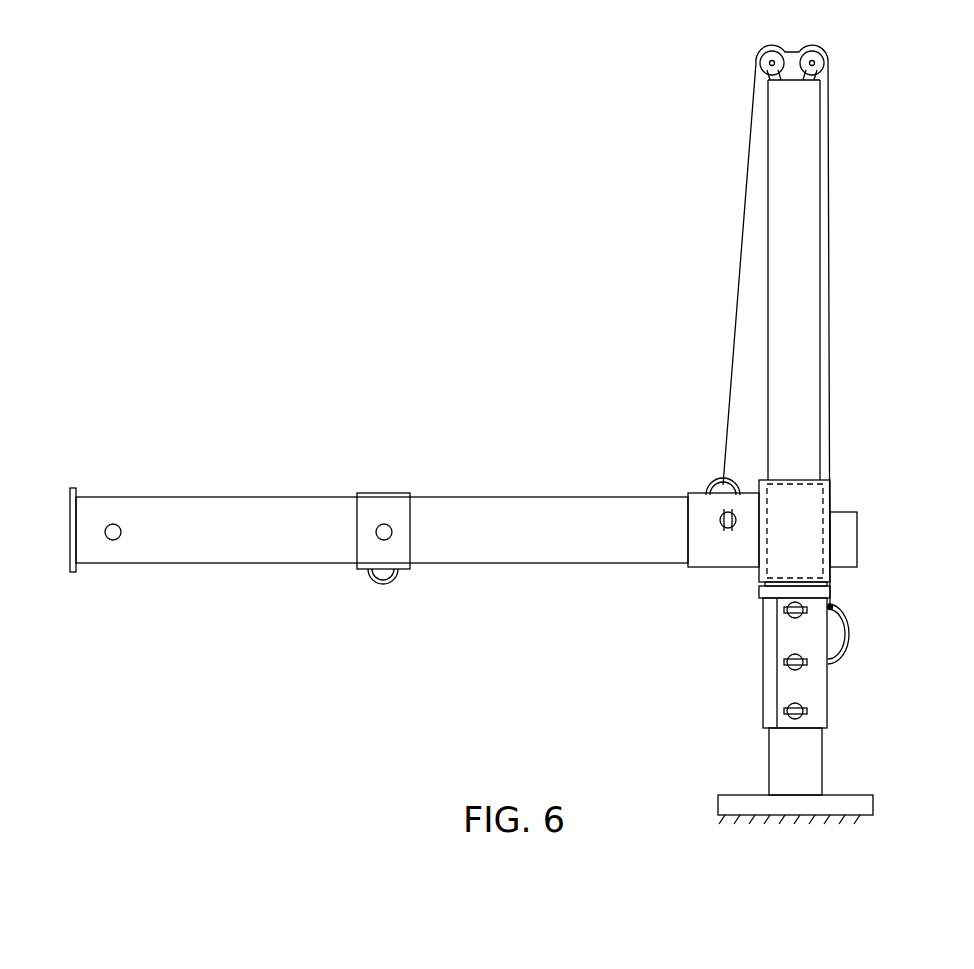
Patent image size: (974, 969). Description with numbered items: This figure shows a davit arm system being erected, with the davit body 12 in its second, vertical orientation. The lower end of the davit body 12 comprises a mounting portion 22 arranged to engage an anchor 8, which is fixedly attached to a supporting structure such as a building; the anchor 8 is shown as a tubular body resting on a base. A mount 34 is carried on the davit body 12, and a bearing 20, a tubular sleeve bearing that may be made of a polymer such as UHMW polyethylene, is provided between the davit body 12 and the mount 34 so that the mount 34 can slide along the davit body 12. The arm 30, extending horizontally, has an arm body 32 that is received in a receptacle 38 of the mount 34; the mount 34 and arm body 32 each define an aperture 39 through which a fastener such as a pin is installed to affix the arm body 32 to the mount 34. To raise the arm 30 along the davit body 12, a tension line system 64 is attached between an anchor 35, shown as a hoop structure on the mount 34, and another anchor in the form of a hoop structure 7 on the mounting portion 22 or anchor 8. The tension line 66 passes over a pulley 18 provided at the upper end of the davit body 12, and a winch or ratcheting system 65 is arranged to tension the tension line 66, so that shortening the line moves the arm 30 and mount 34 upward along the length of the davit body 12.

The hoop structure 7 is at (848, 632).
The anchor 8 is at (822, 765).
The davit body 12 is at (813, 352).
The pulley 18 is at (828, 58).
The bearing 20 is at (760, 588).
The mounting portion 22 is at (827, 712).
The arm 30 is at (540, 498).
The arm body 32 is at (628, 498).
The mount 34 is at (813, 490).
The anchor 35 is at (715, 485).
The receptacle 38 is at (692, 567).
The aperture 39 is at (728, 530).
The tension line system 64 is at (867, 575).
The winch or ratcheting system 65 is at (857, 518).
The tension line 66 is at (739, 282).